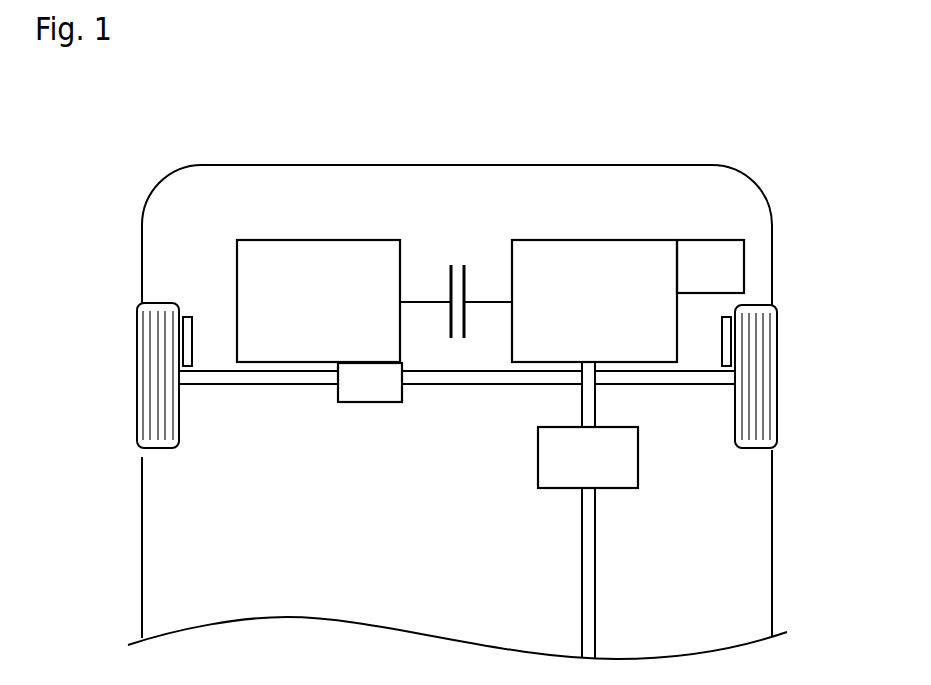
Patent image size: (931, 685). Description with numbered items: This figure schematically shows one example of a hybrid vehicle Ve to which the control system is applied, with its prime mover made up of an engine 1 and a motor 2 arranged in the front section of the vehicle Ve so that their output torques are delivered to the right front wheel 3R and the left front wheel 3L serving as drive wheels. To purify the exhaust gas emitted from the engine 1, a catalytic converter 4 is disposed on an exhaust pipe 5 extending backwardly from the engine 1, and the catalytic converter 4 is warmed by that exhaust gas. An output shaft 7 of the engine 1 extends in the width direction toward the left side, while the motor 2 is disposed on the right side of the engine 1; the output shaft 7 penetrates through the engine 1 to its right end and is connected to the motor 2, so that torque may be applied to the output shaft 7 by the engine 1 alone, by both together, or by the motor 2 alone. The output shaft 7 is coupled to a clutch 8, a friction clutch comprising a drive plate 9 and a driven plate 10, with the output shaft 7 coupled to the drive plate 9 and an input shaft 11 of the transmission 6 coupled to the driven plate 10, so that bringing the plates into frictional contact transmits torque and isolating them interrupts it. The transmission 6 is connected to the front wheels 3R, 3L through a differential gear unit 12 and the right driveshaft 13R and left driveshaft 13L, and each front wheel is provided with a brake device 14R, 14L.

The engine 1 is at (590, 252).
The motor 2 is at (710, 246).
The left front wheel 3L is at (134, 307).
The right front wheel 3R is at (783, 296).
The catalytic converter 4 is at (537, 462).
The exhaust pipe 5 is at (581, 521).
The transmission 6 is at (322, 242).
The output shaft 7 is at (493, 299).
The clutch 8 is at (453, 275).
The drive plate 9 is at (467, 331).
The driven plate 10 is at (449, 329).
The input shaft 11 is at (428, 299).
The differential gear unit 12 is at (367, 404).
The left driveshaft 13L is at (255, 386).
The right driveshaft 13R is at (676, 386).
The brake device 14L is at (189, 316).
The brake device 14R is at (726, 368).
The vehicle Ve is at (130, 553).